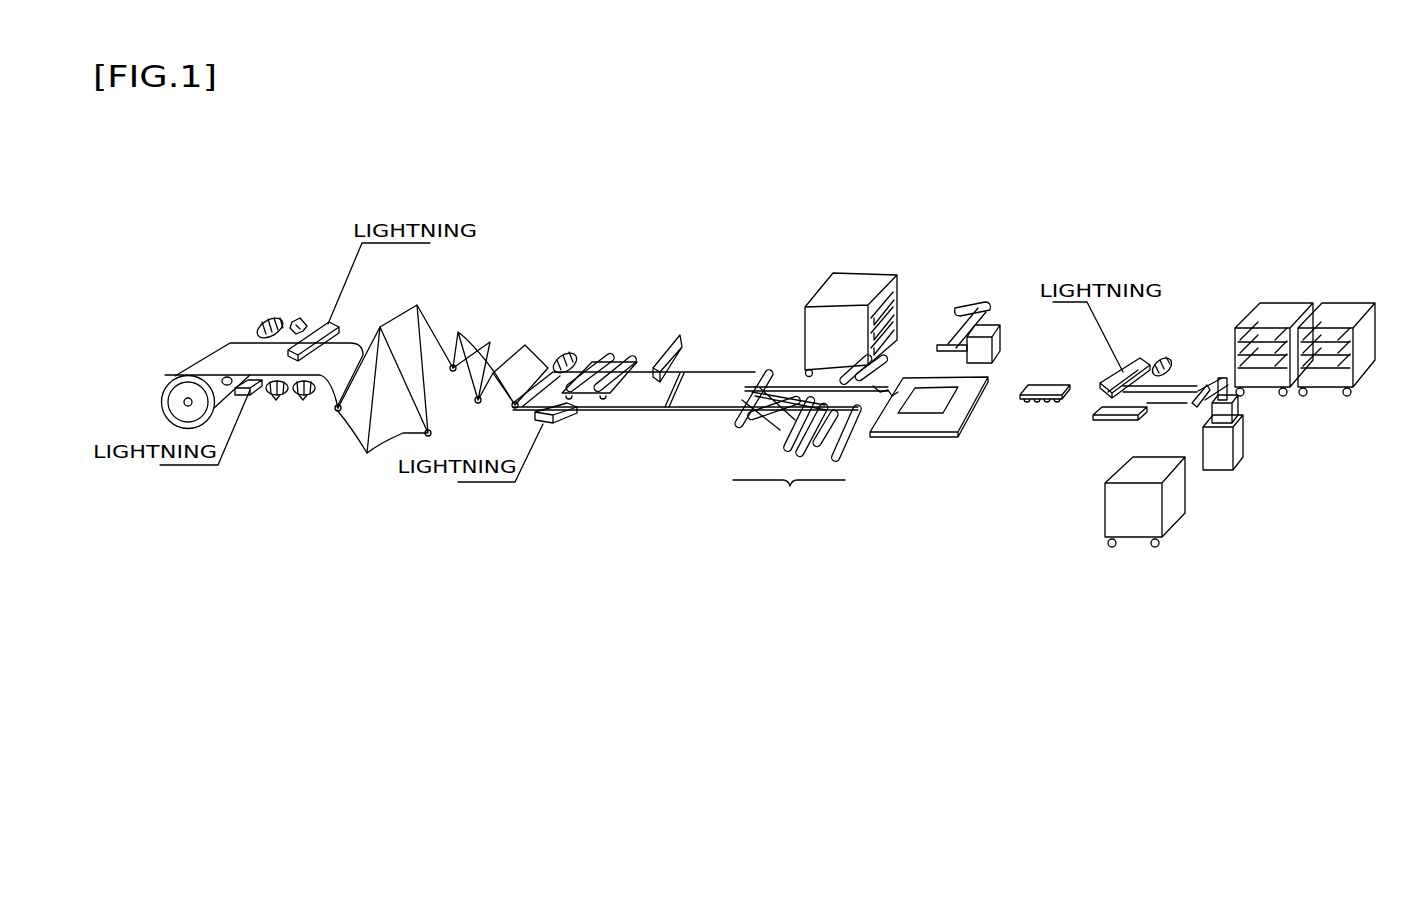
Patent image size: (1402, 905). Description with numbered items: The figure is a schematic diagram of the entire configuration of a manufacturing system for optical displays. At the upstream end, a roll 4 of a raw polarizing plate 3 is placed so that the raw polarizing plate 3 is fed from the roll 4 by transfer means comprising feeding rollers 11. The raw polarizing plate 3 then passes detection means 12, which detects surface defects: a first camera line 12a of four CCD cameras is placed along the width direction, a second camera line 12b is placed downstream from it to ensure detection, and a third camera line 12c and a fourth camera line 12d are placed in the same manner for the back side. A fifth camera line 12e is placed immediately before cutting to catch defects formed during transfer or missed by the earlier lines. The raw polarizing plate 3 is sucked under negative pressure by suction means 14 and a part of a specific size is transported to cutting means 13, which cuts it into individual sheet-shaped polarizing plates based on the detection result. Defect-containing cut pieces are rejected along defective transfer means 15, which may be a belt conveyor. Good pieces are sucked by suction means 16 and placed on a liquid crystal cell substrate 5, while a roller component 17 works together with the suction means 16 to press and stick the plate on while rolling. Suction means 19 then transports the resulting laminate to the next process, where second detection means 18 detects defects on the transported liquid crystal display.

The raw polarizing plate 3 is at (420, 326).
The roll 4 is at (168, 385).
The liquid crystal cell substrate 5 is at (938, 407).
The feeding rollers 11 is at (448, 392).
The detection means 12 is at (328, 253).
The first camera line 12a is at (257, 330).
The second camera line 12b is at (298, 323).
The third camera line 12c is at (280, 395).
The fourth camera line 12d is at (310, 395).
The fifth camera line 12e is at (573, 353).
The cutting means 13 is at (680, 334).
The suction means 14 is at (605, 395).
The defective transfer means 15 is at (797, 448).
The suction means 16 is at (884, 432).
The roller component 17 is at (908, 360).
The second detection means 18 is at (1158, 360).
The suction means 19 is at (1048, 383).